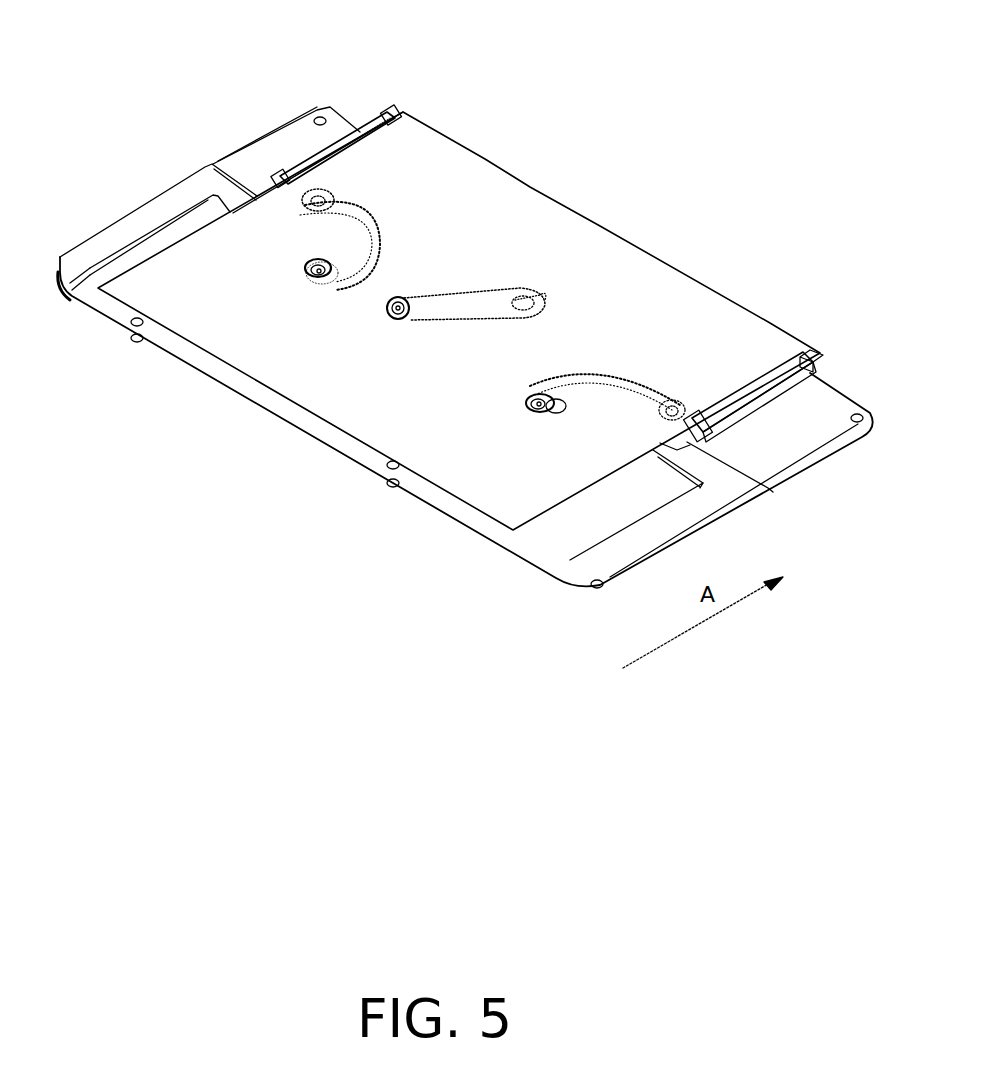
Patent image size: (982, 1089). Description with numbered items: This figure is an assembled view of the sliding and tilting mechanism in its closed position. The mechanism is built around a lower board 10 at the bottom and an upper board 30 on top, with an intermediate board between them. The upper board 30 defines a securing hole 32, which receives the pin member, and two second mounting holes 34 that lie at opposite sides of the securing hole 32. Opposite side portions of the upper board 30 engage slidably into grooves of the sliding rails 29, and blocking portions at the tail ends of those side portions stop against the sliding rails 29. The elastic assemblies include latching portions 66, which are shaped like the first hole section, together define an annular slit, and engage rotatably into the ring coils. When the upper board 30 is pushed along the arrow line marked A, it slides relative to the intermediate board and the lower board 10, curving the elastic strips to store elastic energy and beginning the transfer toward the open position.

The lower board 10 is at (253, 166).
The sliding rails 29 is at (367, 124).
The upper board 30 is at (463, 190).
The securing hole 32 is at (388, 318).
The second mounting holes 34 is at (305, 265).
The latching portions 66 is at (305, 290).